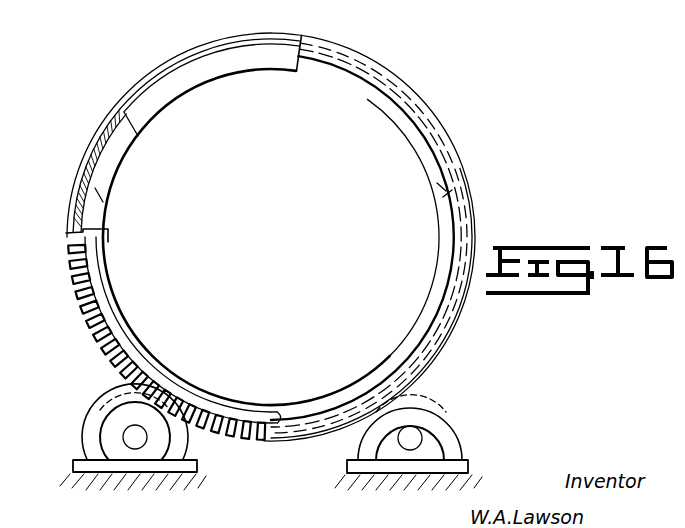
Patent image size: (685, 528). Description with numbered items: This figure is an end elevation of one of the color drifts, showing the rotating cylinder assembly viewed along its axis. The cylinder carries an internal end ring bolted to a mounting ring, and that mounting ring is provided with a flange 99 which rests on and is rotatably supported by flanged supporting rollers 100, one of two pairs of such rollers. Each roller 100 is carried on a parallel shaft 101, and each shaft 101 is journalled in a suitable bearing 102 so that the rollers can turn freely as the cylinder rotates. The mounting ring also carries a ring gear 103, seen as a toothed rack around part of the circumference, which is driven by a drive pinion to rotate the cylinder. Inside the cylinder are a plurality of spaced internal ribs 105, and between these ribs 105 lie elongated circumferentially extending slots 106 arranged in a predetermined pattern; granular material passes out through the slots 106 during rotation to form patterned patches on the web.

The flange 99 is at (72, 208).
The flanged supporting roller 100 is at (102, 405).
The shaft 101 is at (137, 443).
The bearing 102 is at (73, 462).
The ring gear 103 is at (77, 283).
The internal rib 105 is at (343, 76).
The slot 106 is at (167, 72).